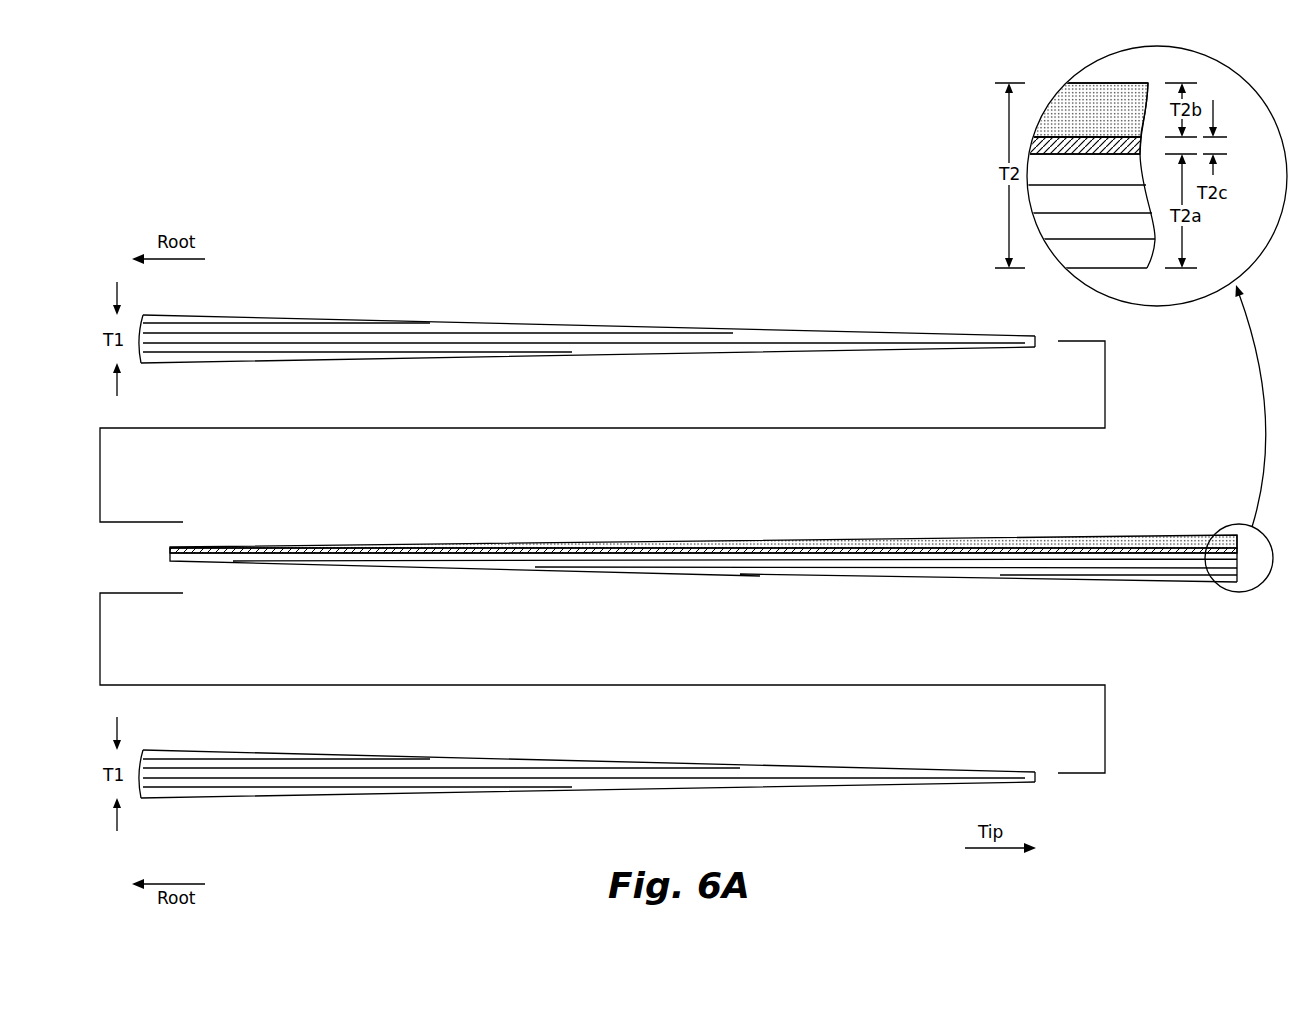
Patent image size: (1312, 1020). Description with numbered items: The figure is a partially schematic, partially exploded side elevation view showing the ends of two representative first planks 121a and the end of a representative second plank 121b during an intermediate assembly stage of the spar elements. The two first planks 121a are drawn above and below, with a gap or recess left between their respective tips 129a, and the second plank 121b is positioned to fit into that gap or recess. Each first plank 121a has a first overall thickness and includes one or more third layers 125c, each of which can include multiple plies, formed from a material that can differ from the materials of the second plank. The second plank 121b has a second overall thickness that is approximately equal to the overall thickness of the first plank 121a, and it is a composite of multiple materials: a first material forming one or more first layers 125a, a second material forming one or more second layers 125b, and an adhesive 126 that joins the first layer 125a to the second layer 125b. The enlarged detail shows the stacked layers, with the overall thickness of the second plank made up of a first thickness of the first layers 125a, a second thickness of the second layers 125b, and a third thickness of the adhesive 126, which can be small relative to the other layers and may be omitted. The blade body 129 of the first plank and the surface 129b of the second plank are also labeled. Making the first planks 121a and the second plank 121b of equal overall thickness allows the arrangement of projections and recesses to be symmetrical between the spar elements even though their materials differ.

The first plank 121a is at (428, 283).
The second plank 121b is at (774, 513).
The first layer 125a is at (1068, 580).
The second layer 125b is at (1000, 540).
The third layer 125c is at (147, 357).
The adhesive 126 is at (1125, 545).
The blade body 129 is at (912, 348).
The tip 129a is at (969, 334).
The top surface of base layer 129b is at (243, 548).